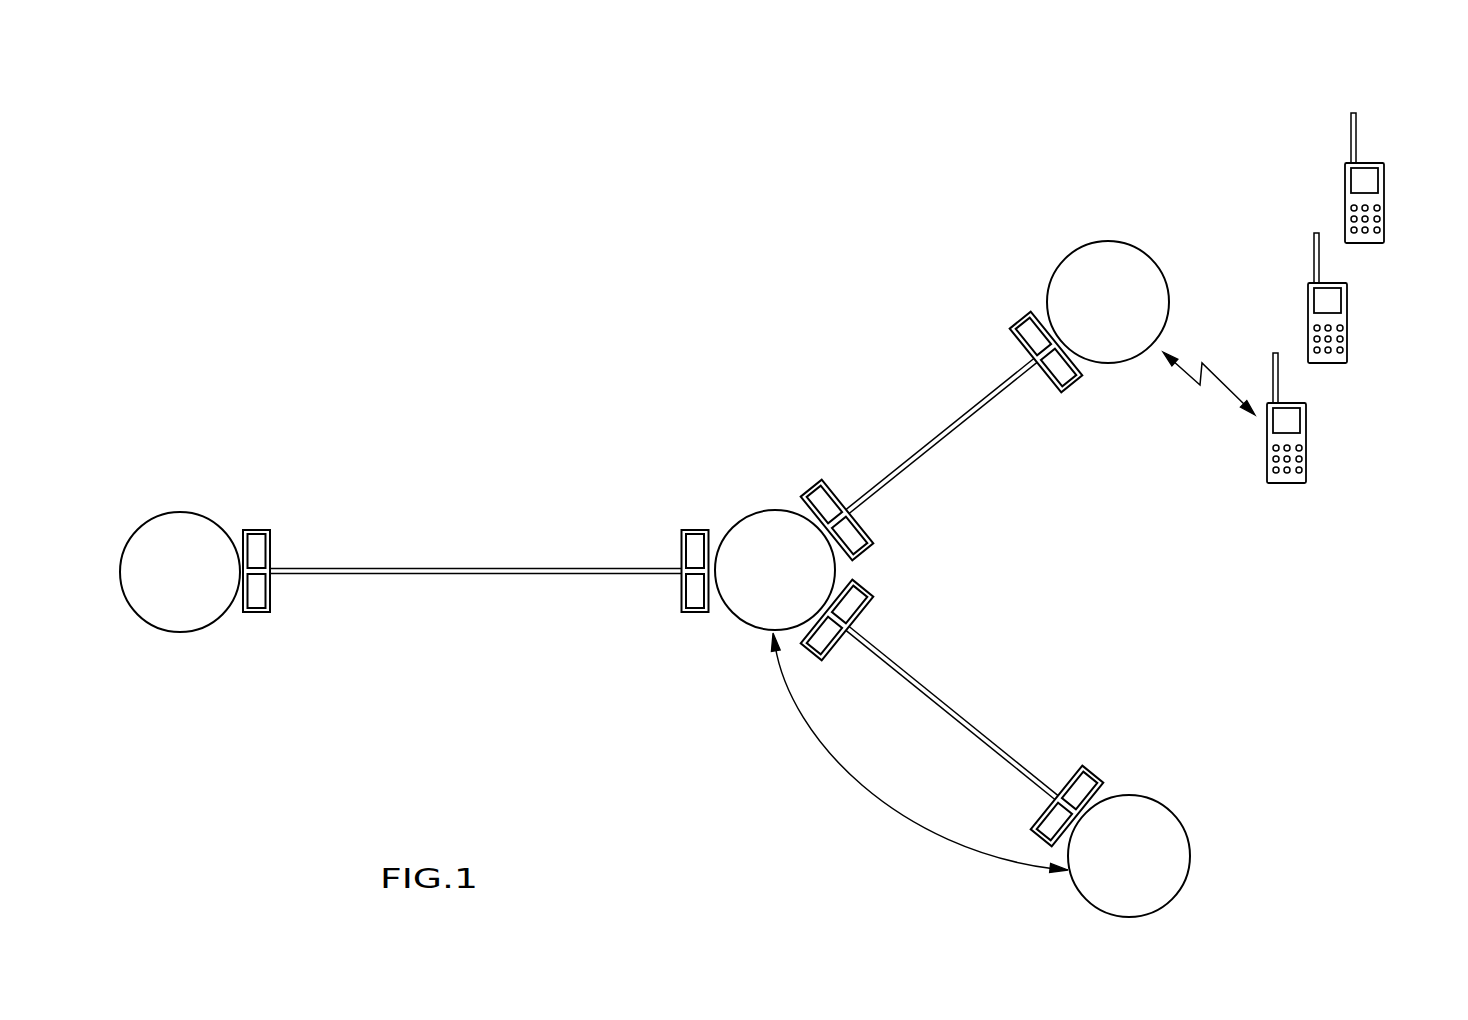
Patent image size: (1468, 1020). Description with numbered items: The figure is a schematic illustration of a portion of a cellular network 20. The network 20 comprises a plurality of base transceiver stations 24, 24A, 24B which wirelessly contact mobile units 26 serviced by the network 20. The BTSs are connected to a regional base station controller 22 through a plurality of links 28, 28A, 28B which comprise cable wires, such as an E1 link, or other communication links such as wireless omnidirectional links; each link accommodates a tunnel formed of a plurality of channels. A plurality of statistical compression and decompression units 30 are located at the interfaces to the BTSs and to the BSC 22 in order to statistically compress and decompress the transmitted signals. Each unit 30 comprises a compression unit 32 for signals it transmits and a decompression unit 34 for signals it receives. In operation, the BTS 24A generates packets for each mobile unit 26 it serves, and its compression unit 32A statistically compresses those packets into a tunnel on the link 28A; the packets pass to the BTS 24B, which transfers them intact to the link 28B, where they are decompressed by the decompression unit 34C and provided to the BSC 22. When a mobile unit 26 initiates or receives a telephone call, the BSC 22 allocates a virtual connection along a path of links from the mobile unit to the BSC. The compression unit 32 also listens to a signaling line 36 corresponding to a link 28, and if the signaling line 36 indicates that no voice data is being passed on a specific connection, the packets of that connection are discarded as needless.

The cellular network 20 is at (418, 296).
The base station controller 22 is at (178, 512).
The base transceiver station 24 is at (1170, 811).
The base transceiver station 24A is at (1062, 257).
The base transceiver station 24B is at (747, 511).
The mobile unit 26 is at (1386, 217).
The link 28 is at (938, 700).
The link 28A is at (952, 437).
The link 28B is at (457, 567).
The statistical compression and decompression unit 30 is at (258, 530).
The compression unit 32 is at (259, 555).
The compression unit 32A is at (1033, 337).
The decompression unit 34 is at (692, 598).
The decompression unit 34C is at (259, 592).
The signaling line 36 is at (871, 782).